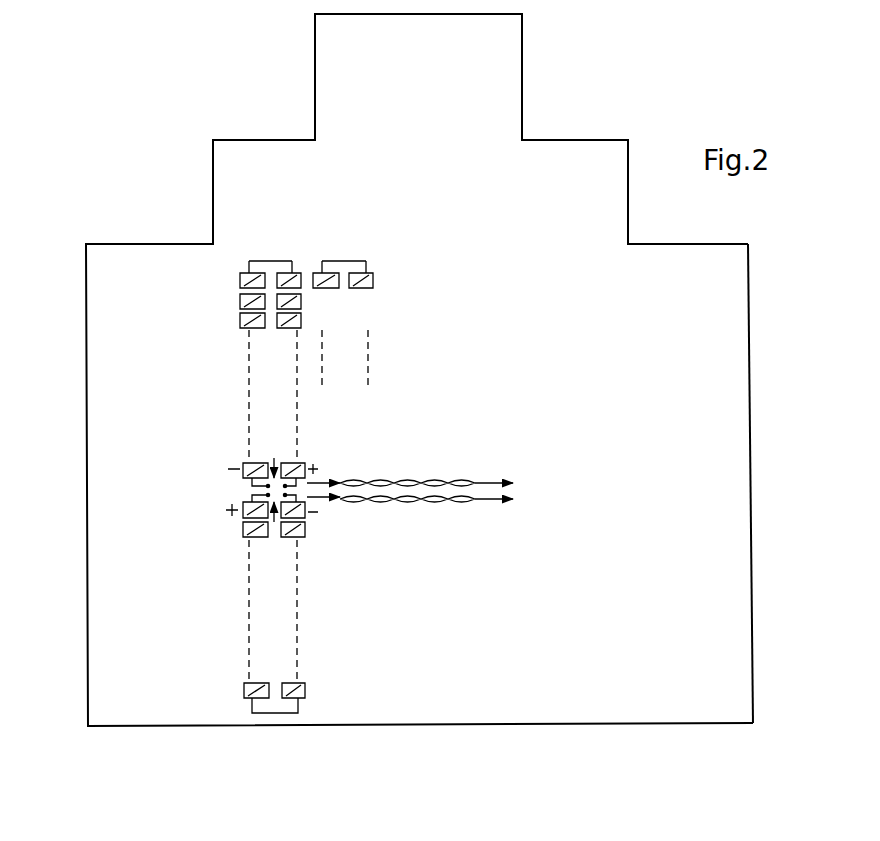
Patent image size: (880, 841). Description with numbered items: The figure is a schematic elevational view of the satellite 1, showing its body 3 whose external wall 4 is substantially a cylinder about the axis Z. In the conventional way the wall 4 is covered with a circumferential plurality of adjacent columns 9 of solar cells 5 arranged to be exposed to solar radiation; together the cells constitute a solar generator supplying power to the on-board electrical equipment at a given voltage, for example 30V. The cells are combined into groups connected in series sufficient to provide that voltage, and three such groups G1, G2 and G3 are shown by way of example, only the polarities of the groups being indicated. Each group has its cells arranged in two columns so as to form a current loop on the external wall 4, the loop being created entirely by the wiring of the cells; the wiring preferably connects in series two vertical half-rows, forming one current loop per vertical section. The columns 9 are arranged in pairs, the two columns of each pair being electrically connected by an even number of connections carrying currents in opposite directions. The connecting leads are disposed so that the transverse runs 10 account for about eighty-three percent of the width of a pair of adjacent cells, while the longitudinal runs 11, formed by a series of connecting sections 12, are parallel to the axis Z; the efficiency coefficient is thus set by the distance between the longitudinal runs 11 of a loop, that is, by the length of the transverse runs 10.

The sensor device 1 is at (190, 165).
The body 3 is at (752, 318).
The external wall 4 is at (640, 357).
The solar cells 5 is at (316, 299).
The columns 9 is at (257, 240).
The transverse runs 10 is at (266, 260).
The longitudinal runs 11 is at (368, 506).
The connecting sections 12 is at (302, 313).
The first group of cells G1 is at (236, 422).
The second group of cells G2 is at (233, 613).
The third group of cells G3 is at (386, 350).
The voltage 30V is at (277, 476).